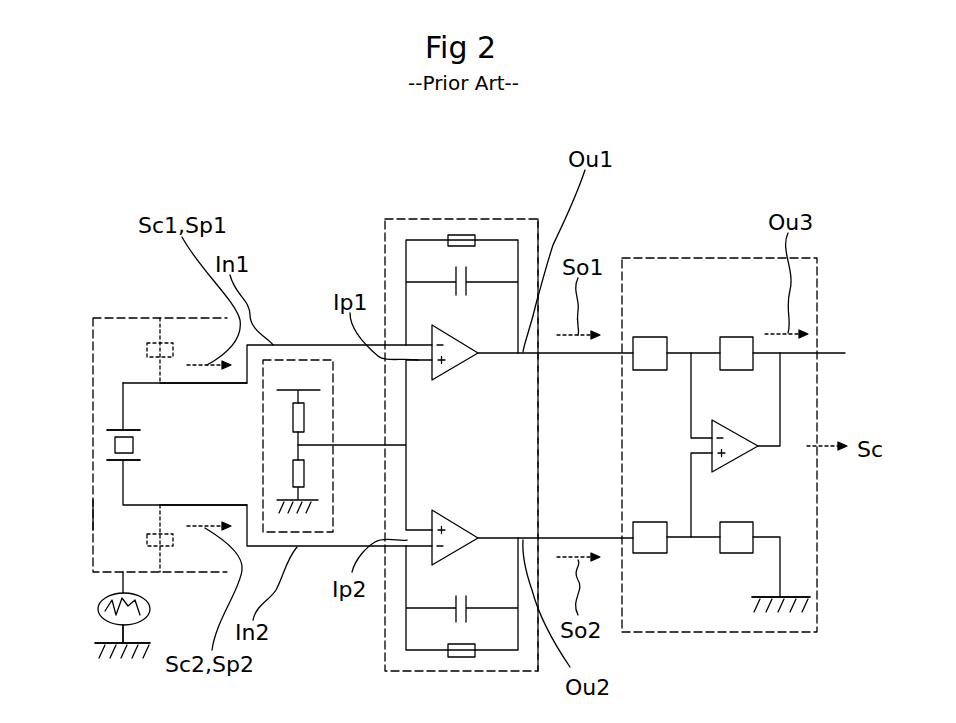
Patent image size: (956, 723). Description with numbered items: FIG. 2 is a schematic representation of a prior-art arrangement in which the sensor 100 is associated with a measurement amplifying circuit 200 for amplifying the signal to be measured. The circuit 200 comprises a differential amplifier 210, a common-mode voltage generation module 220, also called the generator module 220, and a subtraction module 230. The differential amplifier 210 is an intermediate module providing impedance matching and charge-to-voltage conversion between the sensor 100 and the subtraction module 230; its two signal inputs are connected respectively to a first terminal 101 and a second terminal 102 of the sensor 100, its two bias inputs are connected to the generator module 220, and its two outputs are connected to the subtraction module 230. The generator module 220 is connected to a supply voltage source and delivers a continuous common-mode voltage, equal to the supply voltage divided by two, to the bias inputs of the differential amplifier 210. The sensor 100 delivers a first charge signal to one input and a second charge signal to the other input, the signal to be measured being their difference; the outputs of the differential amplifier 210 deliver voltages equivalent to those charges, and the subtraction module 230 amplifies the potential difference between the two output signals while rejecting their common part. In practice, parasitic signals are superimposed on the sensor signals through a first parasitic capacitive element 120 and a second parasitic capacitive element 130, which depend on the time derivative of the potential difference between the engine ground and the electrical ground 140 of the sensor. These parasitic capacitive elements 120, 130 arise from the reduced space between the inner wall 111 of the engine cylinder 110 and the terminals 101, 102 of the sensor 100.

The sensor 100 is at (114, 362).
The first terminal 101 is at (182, 384).
The second terminal 102 is at (182, 505).
The cylinder 110 is at (93, 455).
The inner wall 111 is at (93, 513).
The first parasitic capacitive element 120 is at (164, 325).
The second parasitic capacitive element 130 is at (164, 553).
The electrical ground 140 is at (108, 644).
The measurement amplifying circuit 200 is at (557, 180).
The differential amplifier 210 is at (418, 218).
The common-mode voltage generation module 220 is at (300, 358).
The subtraction module 230 is at (678, 258).